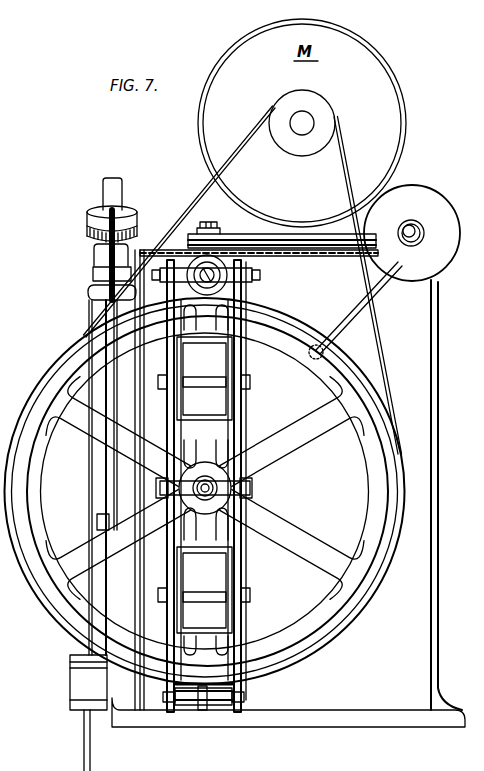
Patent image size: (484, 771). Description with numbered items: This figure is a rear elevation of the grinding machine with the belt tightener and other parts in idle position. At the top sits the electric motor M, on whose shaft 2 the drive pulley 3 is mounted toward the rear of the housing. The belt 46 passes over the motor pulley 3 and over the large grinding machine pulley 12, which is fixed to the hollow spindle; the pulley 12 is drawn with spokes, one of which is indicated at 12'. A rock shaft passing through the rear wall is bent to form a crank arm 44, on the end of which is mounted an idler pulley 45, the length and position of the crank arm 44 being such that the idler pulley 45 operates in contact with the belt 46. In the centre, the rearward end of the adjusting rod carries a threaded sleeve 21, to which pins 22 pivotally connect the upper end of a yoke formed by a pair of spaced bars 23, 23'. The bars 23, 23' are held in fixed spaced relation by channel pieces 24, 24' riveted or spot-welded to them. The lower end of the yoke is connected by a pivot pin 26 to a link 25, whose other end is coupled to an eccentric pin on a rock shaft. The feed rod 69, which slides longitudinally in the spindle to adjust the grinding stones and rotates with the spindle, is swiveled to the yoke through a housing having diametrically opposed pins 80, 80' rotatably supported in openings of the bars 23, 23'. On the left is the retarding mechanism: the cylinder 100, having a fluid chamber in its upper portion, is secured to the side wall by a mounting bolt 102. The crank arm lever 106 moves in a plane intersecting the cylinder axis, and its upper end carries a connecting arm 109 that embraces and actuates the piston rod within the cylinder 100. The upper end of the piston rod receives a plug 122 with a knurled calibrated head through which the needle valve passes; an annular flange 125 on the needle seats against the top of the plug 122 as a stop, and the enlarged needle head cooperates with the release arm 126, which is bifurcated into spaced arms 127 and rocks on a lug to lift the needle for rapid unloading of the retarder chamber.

The shaft 2 is at (306, 121).
The drive pulley 3 is at (326, 123).
The pulley 12 is at (205, 491).
The flywheel spoke 12' is at (198, 488).
The threaded sleeve 21 is at (222, 286).
The pins 22 is at (254, 277).
The bar 23 is at (157, 486).
The bar 23' is at (258, 486).
The channel piece 24 is at (214, 378).
The channel piece 24' is at (221, 590).
The link 25 is at (204, 712).
The pivot pin 26 is at (188, 712).
The crank arm 44 is at (350, 320).
The idler pulley 45 is at (437, 205).
The belt 46 is at (382, 371).
The feed rod 69 is at (216, 486).
The pin 80 is at (194, 502).
The pin 80' is at (264, 489).
The cylinder 100 is at (95, 456).
The mounting bolt 102 is at (96, 522).
The crank arm lever 106 is at (94, 288).
The connecting arm 109 is at (94, 276).
The plug 122 is at (95, 253).
The annular flange 125 is at (88, 213).
The release arm 126 is at (103, 189).
The spaced arms 127 is at (88, 234).